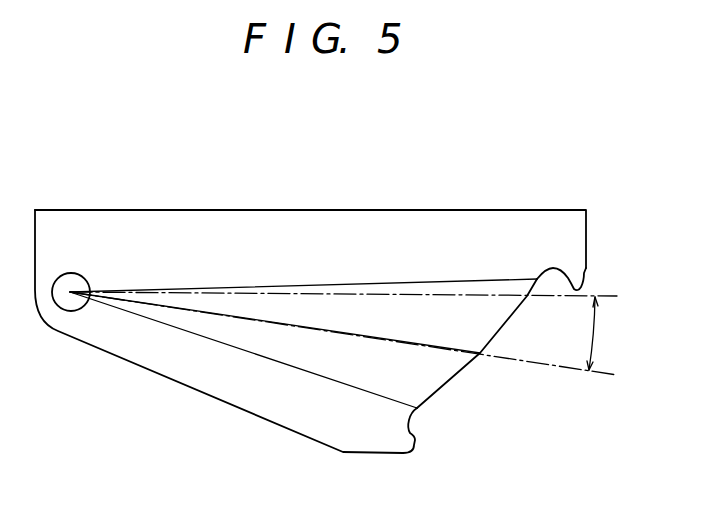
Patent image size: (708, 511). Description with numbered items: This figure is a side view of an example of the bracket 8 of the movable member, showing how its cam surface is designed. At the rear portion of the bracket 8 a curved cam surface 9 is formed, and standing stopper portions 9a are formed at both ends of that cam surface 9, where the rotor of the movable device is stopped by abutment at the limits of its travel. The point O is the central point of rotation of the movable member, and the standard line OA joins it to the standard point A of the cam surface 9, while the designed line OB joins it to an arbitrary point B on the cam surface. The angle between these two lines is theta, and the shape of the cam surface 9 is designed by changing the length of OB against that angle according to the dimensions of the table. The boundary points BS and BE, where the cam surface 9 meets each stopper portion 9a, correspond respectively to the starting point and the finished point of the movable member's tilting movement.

The bracket 8 is at (396, 212).
The cam surface 9 is at (513, 318).
The stopper portion 9a is at (575, 292).
The central point of rotation O is at (77, 285).
The boundary point BS is at (537, 275).
The boundary point BE is at (417, 407).
The standard point A is at (527, 298).
The arbitrary point B is at (480, 356).